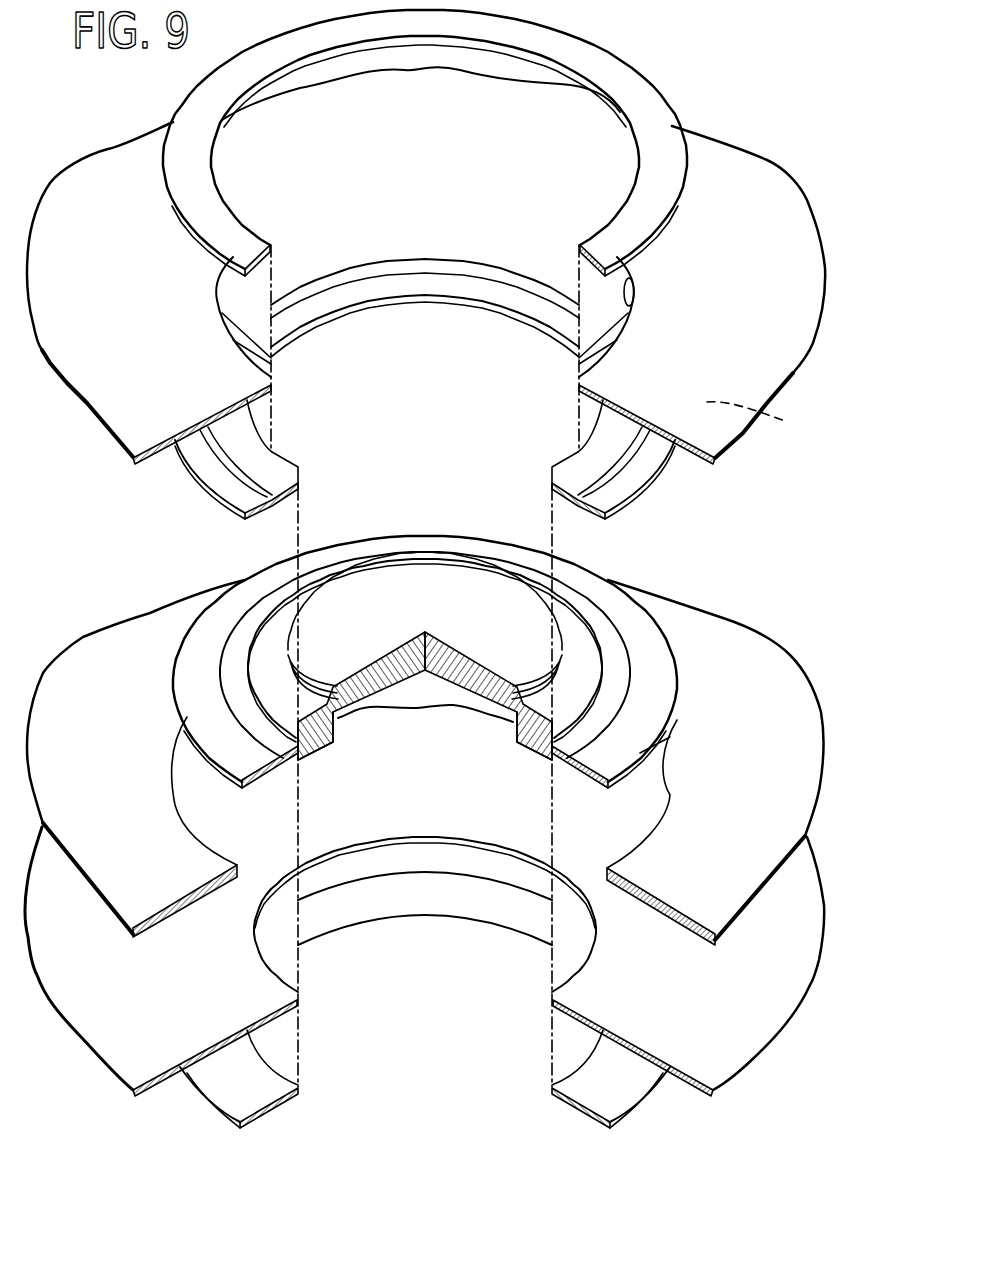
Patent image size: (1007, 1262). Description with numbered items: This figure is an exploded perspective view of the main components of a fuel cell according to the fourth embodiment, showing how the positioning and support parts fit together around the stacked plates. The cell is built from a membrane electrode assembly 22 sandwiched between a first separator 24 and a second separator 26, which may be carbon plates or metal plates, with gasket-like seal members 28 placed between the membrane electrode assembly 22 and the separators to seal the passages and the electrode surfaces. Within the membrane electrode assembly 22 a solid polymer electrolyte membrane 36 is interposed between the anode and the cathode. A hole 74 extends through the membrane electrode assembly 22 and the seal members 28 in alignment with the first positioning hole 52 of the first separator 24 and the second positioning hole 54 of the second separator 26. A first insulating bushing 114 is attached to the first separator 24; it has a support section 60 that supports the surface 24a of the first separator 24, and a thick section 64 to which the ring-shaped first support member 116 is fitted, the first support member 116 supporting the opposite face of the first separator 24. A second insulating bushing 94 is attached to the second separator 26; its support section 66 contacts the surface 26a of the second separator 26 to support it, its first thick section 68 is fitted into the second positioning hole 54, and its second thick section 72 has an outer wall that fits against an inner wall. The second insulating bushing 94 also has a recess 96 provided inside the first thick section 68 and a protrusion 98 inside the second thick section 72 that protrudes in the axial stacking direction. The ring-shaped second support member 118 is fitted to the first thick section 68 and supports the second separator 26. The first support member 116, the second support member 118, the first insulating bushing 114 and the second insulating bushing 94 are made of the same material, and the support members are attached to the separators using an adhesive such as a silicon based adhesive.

The membrane electrode assembly 22 is at (439, 787).
The first separator 24 is at (738, 172).
The surface of the first separator 24a is at (770, 419).
The second separator 26 is at (445, 982).
The surface of the second separator 26a is at (753, 1020).
The seal member 28 is at (742, 648).
The solid polymer electrolyte membrane 36 is at (663, 900).
The first positioning hole 52 is at (634, 300).
The second positioning hole 54 is at (583, 967).
The support section 60 is at (615, 497).
The thick section 64 is at (598, 442).
The support section 66 is at (648, 680).
The first thick section 68 is at (538, 750).
The second thick section 72 is at (581, 637).
The hole 74 is at (677, 775).
The second insulating bushing 94 is at (634, 625).
The recess 96 is at (482, 703).
The protrusion 98 is at (388, 617).
The first insulating bushing 114 is at (680, 471).
The first support member 116 is at (638, 104).
The second support member 118 is at (603, 1102).